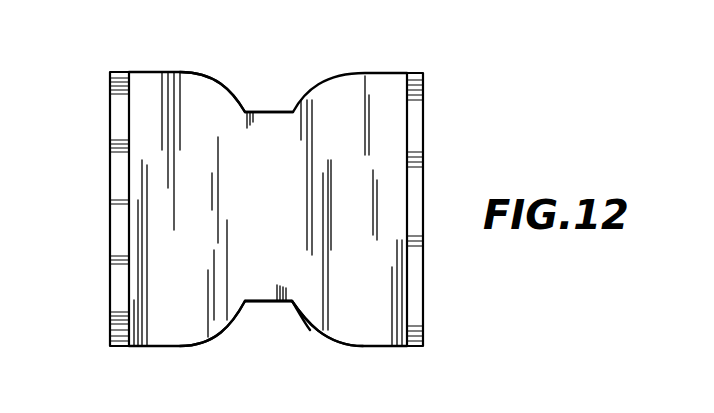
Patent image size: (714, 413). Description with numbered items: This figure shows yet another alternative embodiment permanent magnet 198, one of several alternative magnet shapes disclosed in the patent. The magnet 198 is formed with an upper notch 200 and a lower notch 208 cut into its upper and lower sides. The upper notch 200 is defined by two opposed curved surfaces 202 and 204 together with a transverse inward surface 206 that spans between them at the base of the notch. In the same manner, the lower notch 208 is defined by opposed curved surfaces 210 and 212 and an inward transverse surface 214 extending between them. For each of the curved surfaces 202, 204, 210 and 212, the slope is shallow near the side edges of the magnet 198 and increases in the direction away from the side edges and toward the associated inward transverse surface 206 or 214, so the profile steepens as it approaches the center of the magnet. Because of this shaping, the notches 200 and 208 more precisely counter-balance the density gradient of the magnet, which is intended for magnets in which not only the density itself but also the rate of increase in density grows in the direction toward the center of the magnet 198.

The magnet 198 is at (102, 181).
The upper notch 200 is at (288, 81).
The curved surface 202 is at (217, 84).
The curved surface 204 is at (370, 72).
The transverse inward surface 206 is at (266, 110).
The lower notch 208 is at (282, 311).
The curved surface 210 is at (190, 346).
The curved surface 212 is at (338, 338).
The inward transverse surface 214 is at (268, 303).